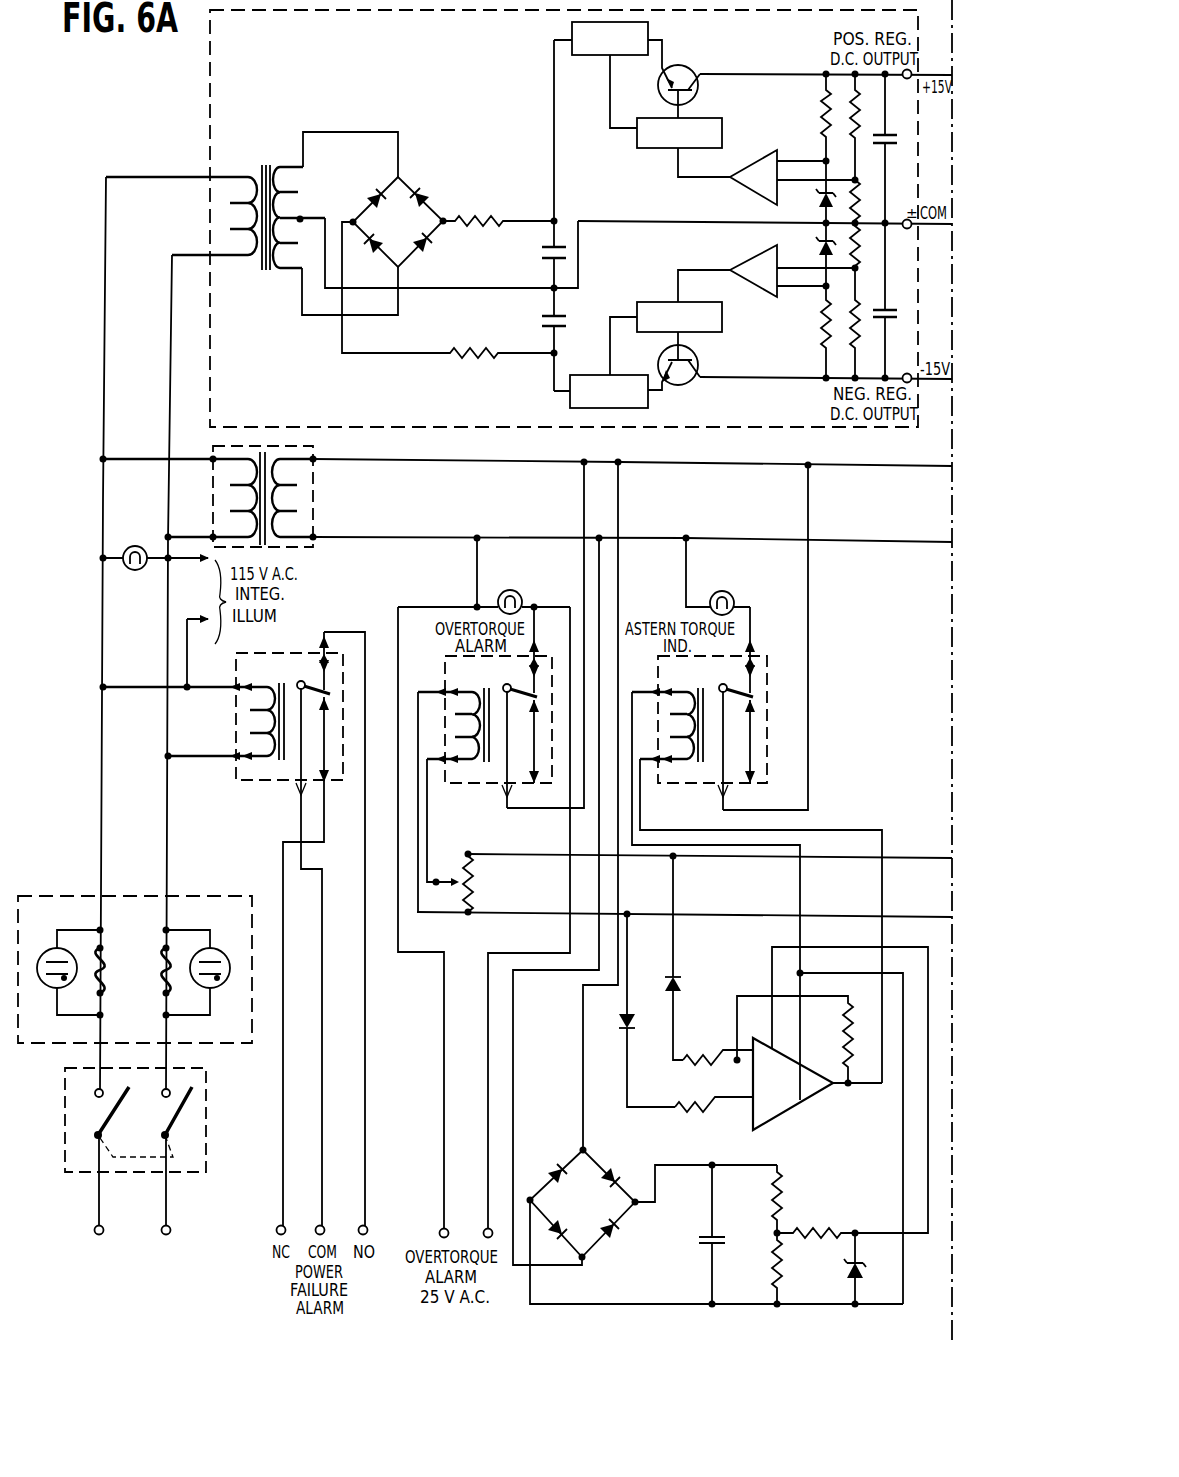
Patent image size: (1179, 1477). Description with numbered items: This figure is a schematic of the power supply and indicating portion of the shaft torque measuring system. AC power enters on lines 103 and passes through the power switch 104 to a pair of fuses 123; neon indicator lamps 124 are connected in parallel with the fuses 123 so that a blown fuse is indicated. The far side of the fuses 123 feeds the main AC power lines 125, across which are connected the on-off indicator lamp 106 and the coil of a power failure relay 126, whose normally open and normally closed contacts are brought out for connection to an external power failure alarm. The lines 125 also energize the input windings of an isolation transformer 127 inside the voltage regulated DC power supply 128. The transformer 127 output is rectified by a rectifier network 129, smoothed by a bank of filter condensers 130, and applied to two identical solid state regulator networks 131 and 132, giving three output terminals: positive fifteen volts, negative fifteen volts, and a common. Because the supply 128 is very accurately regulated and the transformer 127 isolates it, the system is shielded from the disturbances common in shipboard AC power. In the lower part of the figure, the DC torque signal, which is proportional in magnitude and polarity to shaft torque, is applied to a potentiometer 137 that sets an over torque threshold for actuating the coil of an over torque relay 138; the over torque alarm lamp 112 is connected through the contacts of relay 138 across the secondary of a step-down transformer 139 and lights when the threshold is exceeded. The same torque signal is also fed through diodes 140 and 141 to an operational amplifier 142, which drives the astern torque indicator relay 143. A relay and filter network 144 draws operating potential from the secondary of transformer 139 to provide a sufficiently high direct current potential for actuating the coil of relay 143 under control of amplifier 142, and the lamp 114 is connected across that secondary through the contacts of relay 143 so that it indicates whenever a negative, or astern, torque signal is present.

The lines 103 is at (99, 1203).
The power switch 104 is at (208, 1103).
The on-off indicator lamp 106 is at (122, 552).
The over torque alarm lamp 112 is at (525, 572).
The lamp 114 is at (747, 572).
The fuses 123 is at (165, 967).
The neon indicator lamps 124 is at (44, 954).
The main AC power lines 125 is at (168, 807).
The power failure relay 126 is at (266, 656).
The isolation transformer 127 is at (254, 176).
The voltage regulated DC power supply 128 is at (210, 84).
The rectifier network 129 is at (405, 190).
The bank of filter condensers 130 is at (559, 239).
The solid state regulator network 131 is at (666, 172).
The solid state regulator network 132 is at (650, 268).
The potentiometer 137 is at (461, 876).
The over torque relay 138 is at (446, 667).
The step-down transformer 139 is at (290, 548).
The diode 140 is at (679, 986).
The diode 141 is at (630, 1021).
The operational amplifier 142 is at (792, 1110).
The astern torque indicator relay 143 is at (766, 670).
The relay and filter network 144 is at (698, 1286).